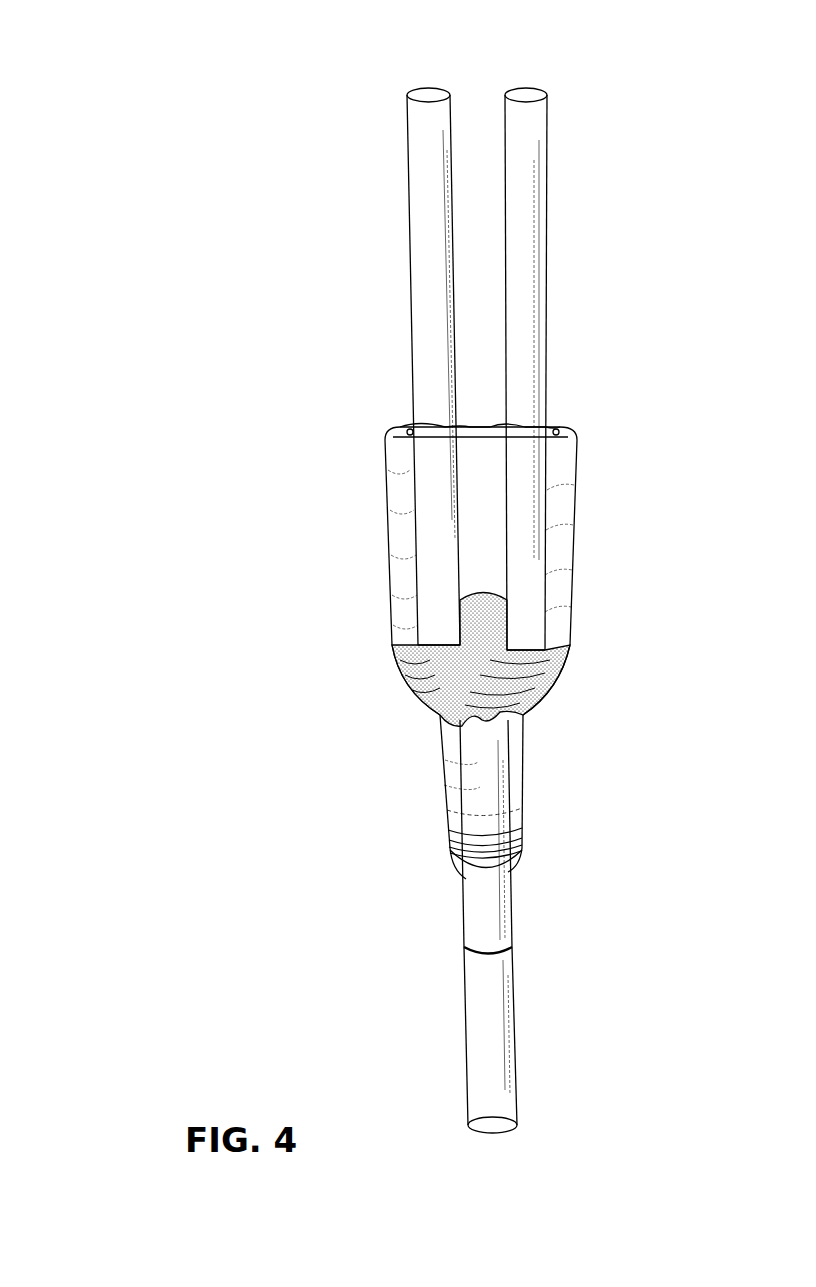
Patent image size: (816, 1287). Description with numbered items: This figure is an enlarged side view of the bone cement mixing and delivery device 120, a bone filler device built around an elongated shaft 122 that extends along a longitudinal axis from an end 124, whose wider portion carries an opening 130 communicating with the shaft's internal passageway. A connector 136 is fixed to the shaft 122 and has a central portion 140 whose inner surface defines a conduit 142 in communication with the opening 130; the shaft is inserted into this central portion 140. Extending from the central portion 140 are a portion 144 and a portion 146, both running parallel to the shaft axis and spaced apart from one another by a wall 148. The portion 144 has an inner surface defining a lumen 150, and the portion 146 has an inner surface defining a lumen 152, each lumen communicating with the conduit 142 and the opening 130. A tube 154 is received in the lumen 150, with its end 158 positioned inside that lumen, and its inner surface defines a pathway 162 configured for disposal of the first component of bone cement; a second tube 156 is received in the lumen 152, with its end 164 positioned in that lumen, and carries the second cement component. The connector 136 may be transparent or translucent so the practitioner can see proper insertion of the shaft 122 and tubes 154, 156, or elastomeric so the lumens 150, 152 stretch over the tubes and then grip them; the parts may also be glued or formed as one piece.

The bone cement mixing and delivery device 120 is at (146, 96).
The elongated shaft 122 is at (463, 1038).
The end 124 is at (494, 910).
The opening 130 is at (482, 721).
The connector 136 is at (617, 578).
The central portion 140 is at (517, 768).
The conduit 142 is at (461, 681).
The portion 144 is at (395, 483).
The portion 146 is at (576, 465).
The wall 148 is at (474, 457).
The lumen 150 is at (403, 576).
The lumen 152 is at (547, 555).
The tube 154 is at (425, 236).
The tube 156 is at (530, 172).
The end 158 is at (435, 613).
The pathway 162 is at (428, 178).
The end 164 is at (540, 626).